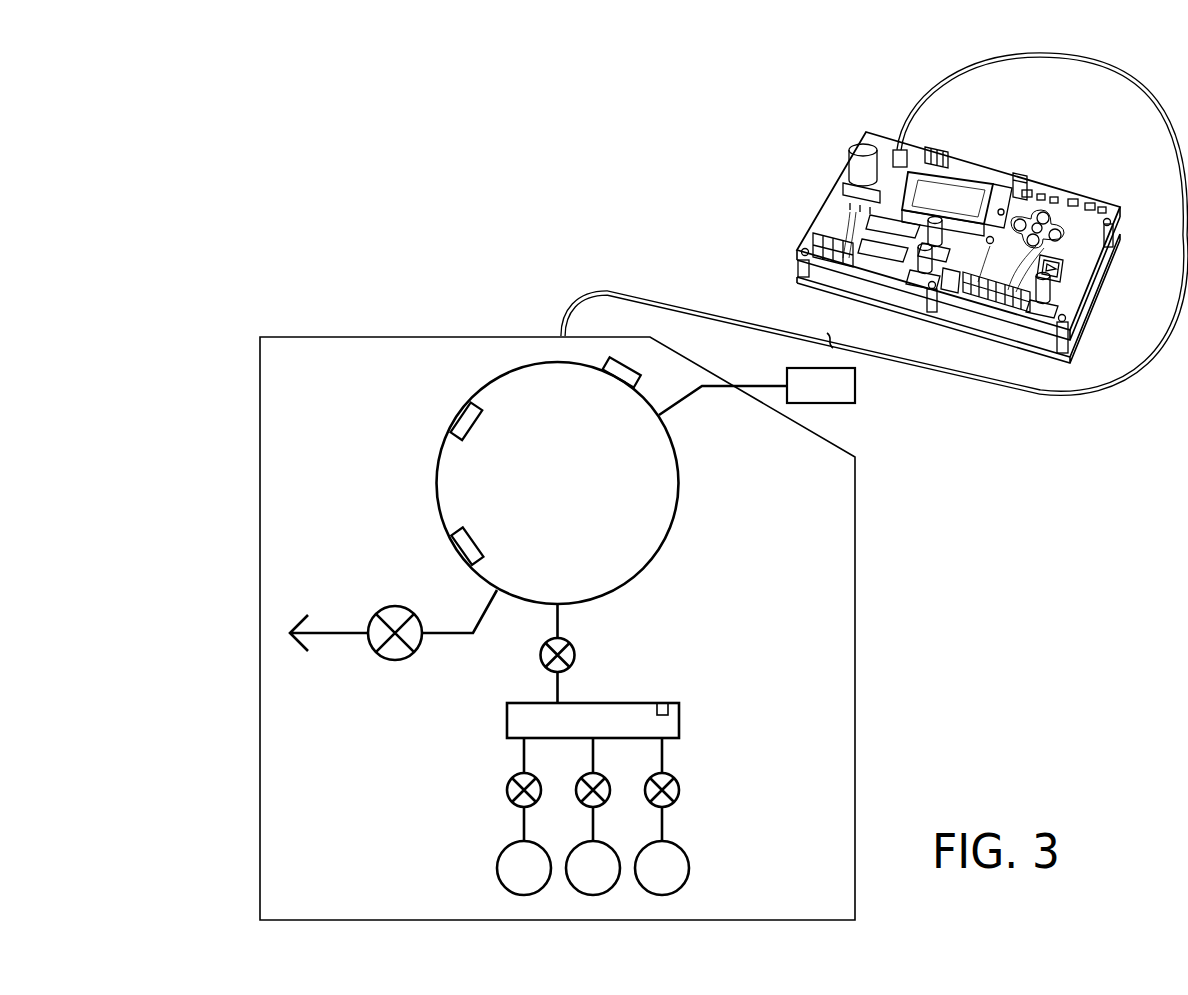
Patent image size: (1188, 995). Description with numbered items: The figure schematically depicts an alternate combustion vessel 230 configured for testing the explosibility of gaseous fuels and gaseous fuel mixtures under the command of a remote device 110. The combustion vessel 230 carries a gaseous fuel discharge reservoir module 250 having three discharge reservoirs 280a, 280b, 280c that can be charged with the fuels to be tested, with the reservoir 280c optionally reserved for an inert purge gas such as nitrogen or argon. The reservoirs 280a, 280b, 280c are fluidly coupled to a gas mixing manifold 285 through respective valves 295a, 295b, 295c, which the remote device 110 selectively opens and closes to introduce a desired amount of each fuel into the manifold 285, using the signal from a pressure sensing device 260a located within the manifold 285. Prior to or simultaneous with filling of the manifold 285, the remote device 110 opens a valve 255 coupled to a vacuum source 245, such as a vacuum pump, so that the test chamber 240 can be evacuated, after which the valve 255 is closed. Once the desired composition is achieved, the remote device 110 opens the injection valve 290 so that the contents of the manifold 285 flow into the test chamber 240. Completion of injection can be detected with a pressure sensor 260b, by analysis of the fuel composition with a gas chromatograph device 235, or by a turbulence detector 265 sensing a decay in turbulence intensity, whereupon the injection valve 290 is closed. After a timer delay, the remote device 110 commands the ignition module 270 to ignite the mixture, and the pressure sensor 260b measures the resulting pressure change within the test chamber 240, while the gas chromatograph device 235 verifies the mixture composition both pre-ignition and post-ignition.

The remote device 110 is at (1093, 154).
The combustion vessel 230 is at (202, 386).
The gas chromatograph device 235 is at (848, 404).
The test chamber 240 is at (644, 548).
The vacuum source 245 is at (338, 634).
The gaseous fuel discharge reservoir module 250 is at (748, 695).
The valve 255 is at (400, 656).
The pressure sensing device 260a is at (663, 703).
The pressure sensor 260b is at (460, 418).
The turbulence detector 265 is at (630, 364).
The ignition module 270 is at (461, 549).
The discharge reservoir 280a is at (498, 866).
The discharge reservoir 280b is at (573, 887).
The discharge reservoir 280c is at (689, 865).
The gas mixing manifold 285 is at (507, 718).
The injection valve 290 is at (573, 654).
The valve 295a is at (508, 791).
The valve 295b is at (578, 777).
The valve 295c is at (679, 797).